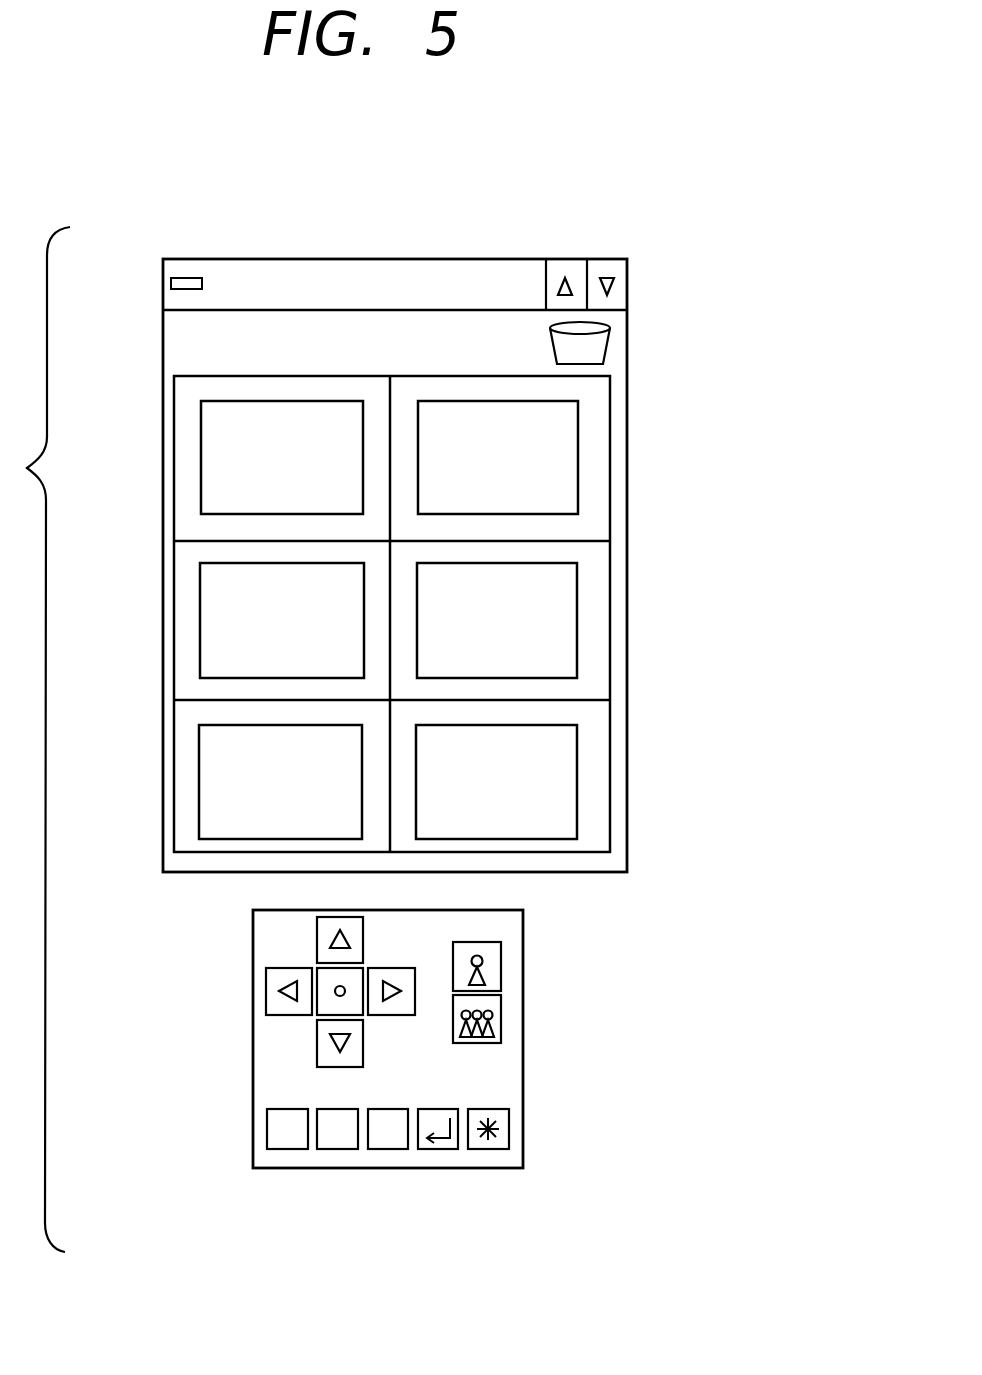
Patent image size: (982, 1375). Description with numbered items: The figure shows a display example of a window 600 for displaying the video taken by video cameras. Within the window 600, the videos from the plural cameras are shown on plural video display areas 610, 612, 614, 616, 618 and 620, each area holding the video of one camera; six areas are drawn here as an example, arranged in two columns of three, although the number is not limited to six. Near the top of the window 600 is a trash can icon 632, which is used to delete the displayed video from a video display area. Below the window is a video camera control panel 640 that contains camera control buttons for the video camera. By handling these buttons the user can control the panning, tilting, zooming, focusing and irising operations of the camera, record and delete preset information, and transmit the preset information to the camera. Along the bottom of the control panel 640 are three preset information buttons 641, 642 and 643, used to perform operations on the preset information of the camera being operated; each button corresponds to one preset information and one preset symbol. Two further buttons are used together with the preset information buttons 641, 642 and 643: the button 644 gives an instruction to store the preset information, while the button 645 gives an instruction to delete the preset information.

The window 600 is at (422, 258).
The trash can icon 632 is at (600, 343).
The video display area 610 is at (190, 423).
The video display area 612 is at (590, 443).
The video display area 614 is at (190, 588).
The video display area 616 is at (590, 610).
The video display area 618 is at (190, 742).
The video display area 620 is at (590, 775).
The video camera control panel 640 is at (523, 967).
The preset information button 641 is at (283, 1149).
The preset information button 642 is at (333, 1149).
The preset information button 643 is at (388, 1149).
The storing instruction button 644 is at (438, 1149).
The deleting instruction button 645 is at (488, 1149).